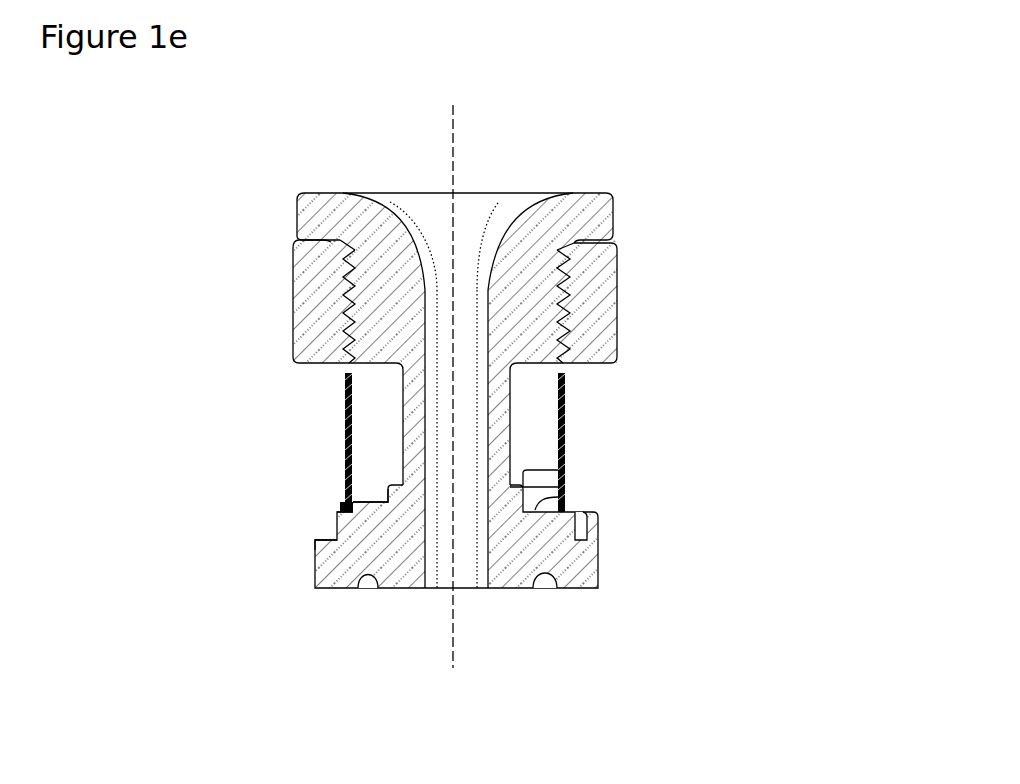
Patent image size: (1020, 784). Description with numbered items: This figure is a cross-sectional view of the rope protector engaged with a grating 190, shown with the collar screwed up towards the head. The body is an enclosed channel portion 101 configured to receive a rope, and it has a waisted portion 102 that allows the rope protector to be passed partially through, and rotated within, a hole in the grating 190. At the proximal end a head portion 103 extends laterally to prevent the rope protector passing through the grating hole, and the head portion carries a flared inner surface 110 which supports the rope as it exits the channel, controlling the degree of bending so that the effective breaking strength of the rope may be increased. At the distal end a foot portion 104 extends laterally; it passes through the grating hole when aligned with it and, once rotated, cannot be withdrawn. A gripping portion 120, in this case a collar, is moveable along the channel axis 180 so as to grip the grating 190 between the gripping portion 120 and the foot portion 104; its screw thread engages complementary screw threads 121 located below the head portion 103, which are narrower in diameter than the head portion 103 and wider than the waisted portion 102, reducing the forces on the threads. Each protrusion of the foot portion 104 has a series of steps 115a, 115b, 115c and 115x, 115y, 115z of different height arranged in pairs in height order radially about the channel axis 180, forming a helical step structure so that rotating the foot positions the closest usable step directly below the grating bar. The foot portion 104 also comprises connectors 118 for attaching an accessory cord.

The enclosed channel portion 101 is at (435, 308).
The waisted portion 102 is at (490, 443).
The head portion 103 is at (613, 207).
The foot portion 104 is at (390, 541).
The flared inner surface 110 is at (517, 197).
The connectors 118 is at (542, 580).
The gripping portion 120 is at (597, 308).
The complementary screw threads 121 is at (567, 278).
The grating 190 is at (567, 455).
The step 115a is at (565, 470).
The step 115b is at (565, 497).
The step 115c is at (590, 535).
The step 115x is at (348, 492).
The step 115y is at (350, 519).
The step 115z is at (317, 545).
The channel axis 180 is at (455, 648).